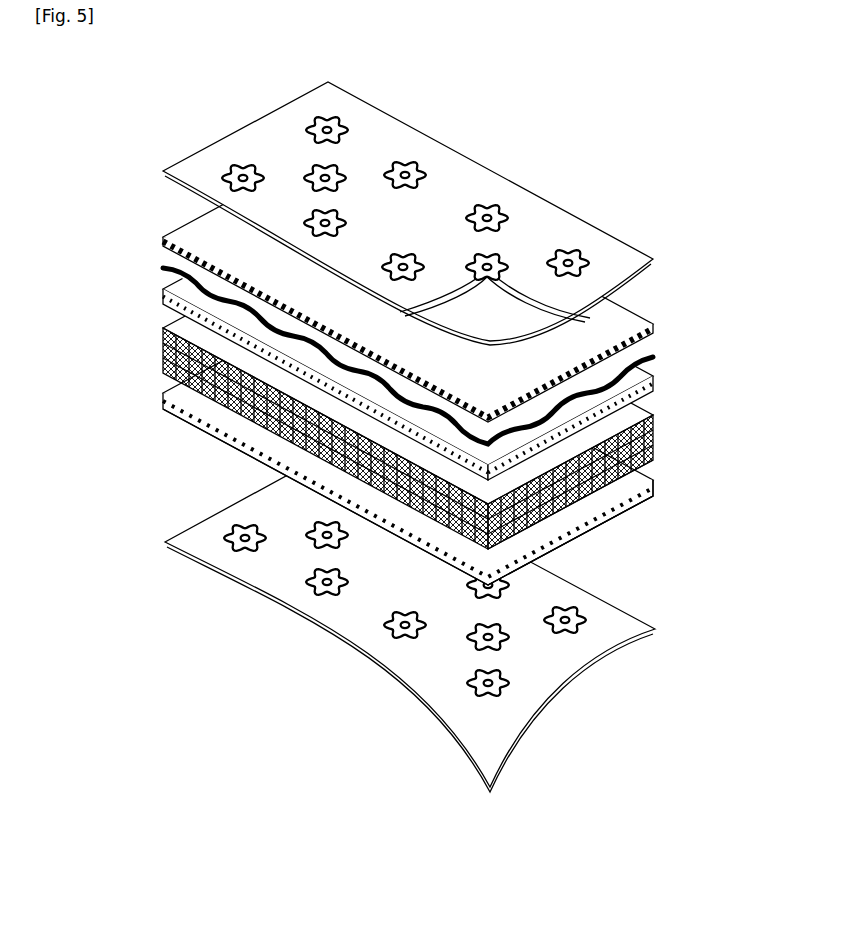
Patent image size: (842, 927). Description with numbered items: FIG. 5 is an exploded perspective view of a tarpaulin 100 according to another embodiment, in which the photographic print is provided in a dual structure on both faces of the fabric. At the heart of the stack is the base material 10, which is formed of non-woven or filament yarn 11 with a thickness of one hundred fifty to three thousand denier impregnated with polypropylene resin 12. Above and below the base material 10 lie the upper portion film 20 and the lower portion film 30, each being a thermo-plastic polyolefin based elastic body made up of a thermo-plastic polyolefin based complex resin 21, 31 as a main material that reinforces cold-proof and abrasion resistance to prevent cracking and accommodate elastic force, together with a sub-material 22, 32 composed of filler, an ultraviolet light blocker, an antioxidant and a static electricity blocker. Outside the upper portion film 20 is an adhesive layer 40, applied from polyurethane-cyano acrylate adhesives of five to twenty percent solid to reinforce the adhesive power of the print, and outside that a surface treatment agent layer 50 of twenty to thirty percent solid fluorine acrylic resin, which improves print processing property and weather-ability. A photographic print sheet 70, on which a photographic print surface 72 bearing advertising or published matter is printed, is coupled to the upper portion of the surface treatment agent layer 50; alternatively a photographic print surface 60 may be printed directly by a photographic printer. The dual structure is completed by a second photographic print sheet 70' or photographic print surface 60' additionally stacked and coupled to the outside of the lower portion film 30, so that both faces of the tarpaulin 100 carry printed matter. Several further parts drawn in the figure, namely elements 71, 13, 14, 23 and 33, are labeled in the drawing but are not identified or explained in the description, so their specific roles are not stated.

The tarpaulin 100 is at (522, 115).
The photographic print sheet 70 is at (364, 203).
The cover fabric 71 is at (165, 175).
The photographic print surface 72 is at (222, 167).
The photographic print surface 60 is at (520, 247).
The surface treatment agent layer 50 is at (620, 313).
The adhesive layer 40 is at (650, 348).
The base material 10 is at (674, 385).
The upper thin layer 13 is at (647, 400).
The non-woven or filament yarn 11 is at (658, 428).
The polypropylene resin 12 is at (658, 457).
The lower thin layer 14 is at (660, 488).
The upper portion film 20 is at (166, 284).
The upper thin layer band 23 is at (160, 304).
The sub-material 22 is at (172, 297).
The thermo-plastic polyolefin based complex resin 21 is at (160, 363).
The lower portion film 30 is at (537, 543).
The thermo-plastic polyolefin based complex resin 31 is at (628, 507).
The sub-material 32 is at (600, 512).
The bottom layer lower edge 33 is at (545, 547).
The photographic print sheet 70' is at (352, 621).
The photographic print surface 60' is at (214, 500).